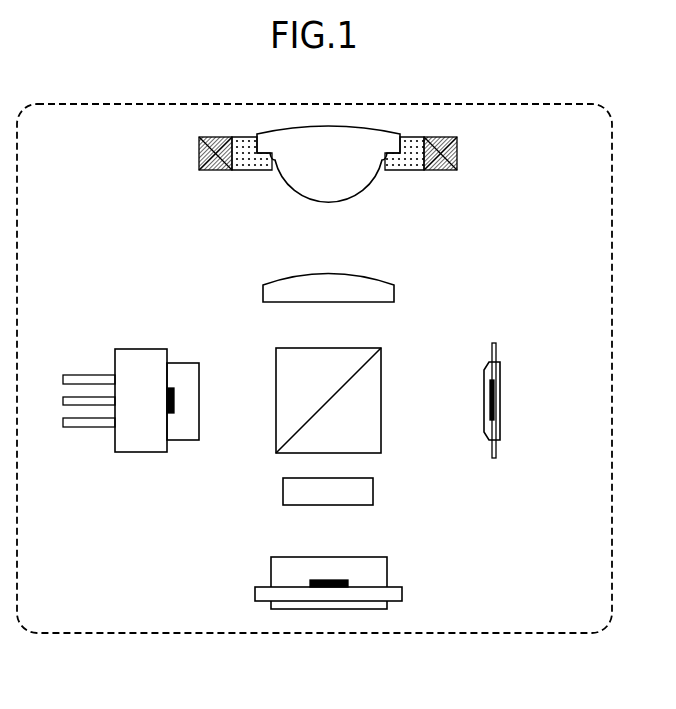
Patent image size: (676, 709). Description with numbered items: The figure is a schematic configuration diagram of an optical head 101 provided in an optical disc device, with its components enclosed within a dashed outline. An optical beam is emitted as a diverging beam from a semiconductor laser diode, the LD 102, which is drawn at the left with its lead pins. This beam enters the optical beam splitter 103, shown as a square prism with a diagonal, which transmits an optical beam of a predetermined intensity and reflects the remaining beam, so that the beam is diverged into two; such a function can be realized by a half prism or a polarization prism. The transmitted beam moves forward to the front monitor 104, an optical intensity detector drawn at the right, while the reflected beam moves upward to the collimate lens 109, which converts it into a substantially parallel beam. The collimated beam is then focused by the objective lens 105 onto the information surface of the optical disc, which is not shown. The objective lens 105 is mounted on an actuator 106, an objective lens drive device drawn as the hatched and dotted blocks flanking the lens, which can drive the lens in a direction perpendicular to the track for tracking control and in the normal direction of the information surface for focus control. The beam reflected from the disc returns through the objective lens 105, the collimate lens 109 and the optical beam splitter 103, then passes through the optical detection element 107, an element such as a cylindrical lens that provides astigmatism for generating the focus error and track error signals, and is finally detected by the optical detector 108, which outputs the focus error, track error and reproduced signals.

The optical head 101 is at (551, 104).
The LD (semiconductor laser diode) 102 is at (143, 452).
The optical beam splitter 103 is at (376, 408).
The front monitor 104 is at (500, 365).
The objective lens 105 is at (343, 198).
The actuator 106 is at (458, 152).
The optical detection element 107 is at (370, 492).
The optical detector 108 is at (383, 568).
The collimate lens 109 is at (397, 291).